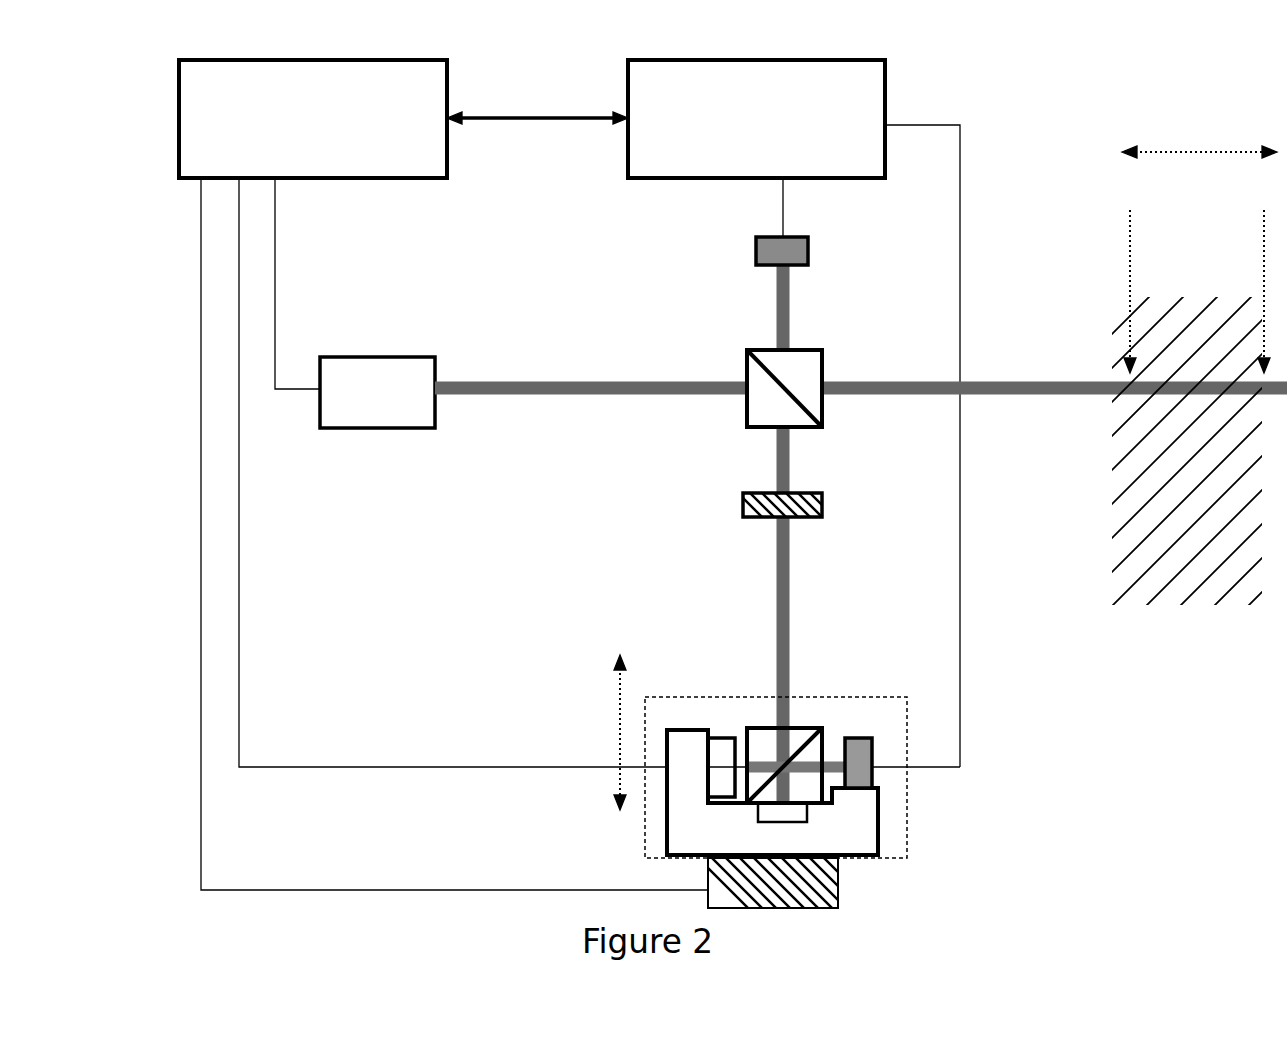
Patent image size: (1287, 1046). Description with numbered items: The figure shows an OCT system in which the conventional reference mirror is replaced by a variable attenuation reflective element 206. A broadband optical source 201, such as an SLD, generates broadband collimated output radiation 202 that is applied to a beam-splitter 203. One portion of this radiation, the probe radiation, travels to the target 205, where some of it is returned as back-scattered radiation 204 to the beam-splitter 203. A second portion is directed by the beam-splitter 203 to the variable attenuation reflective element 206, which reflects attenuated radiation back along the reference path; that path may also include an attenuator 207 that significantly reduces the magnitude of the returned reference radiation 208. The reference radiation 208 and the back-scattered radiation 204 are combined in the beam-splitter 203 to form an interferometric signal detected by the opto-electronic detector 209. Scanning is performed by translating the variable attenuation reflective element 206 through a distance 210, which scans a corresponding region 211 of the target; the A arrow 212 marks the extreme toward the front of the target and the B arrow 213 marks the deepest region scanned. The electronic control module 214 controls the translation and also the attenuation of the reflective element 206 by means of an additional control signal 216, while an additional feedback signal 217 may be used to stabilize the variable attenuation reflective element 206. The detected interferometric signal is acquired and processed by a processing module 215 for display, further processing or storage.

The broadband optical source 201 is at (440, 418).
The broadband collimated output radiation 202 is at (588, 370).
The beam-splitter 203 is at (827, 425).
The back-scattered radiation 204 is at (937, 368).
The target 205 is at (1188, 612).
The variable attenuation reflective element 206 is at (908, 828).
The attenuator 207 is at (742, 497).
The reference radiation 208 is at (797, 465).
The opto-electronic detector 209 is at (752, 258).
The translation distance 210 is at (610, 725).
The scanned region of the target 211 is at (1175, 135).
The A arrow 212 is at (1120, 262).
The B arrow 213 is at (1255, 262).
The electronic control module 214 is at (178, 108).
The processing module 215 is at (893, 75).
The control signal 216 is at (243, 575).
The feedback signal 217 is at (966, 680).